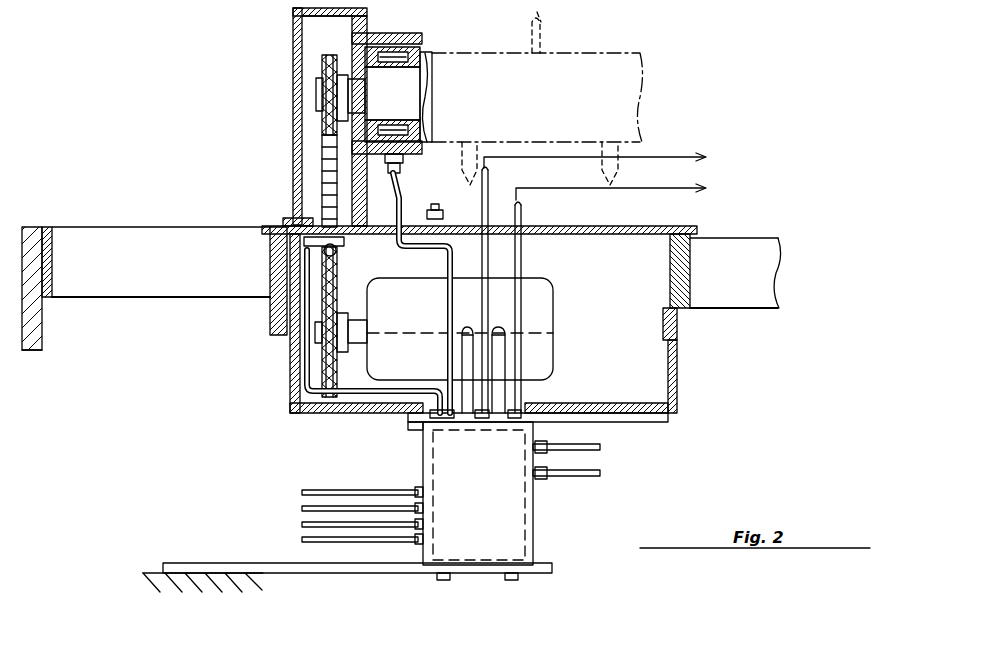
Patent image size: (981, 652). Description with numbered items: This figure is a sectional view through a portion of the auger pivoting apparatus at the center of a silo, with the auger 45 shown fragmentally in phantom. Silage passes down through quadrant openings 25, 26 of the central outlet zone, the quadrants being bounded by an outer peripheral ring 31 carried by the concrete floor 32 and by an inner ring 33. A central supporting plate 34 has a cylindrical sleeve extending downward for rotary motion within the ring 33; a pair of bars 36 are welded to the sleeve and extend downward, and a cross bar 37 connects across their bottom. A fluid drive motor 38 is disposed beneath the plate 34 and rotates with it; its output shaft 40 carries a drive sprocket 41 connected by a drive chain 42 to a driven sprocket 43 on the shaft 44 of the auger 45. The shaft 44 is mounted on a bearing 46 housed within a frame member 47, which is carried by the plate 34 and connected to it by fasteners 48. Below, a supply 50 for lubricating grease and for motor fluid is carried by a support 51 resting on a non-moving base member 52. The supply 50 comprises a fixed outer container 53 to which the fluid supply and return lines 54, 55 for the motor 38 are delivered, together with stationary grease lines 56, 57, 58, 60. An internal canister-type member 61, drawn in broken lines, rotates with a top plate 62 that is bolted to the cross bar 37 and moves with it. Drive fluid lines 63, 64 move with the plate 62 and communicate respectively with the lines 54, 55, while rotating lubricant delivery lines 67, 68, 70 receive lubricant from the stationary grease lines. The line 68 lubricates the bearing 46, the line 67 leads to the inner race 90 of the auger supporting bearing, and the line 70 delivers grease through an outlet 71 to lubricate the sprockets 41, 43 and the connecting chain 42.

The quadrant opening 25 is at (142, 243).
The quadrant opening 26 is at (764, 292).
The outer peripheral ring 31 is at (52, 230).
The concrete floor 32 is at (35, 227).
The inner ring 33 is at (272, 250).
The central supporting plate 34 is at (553, 230).
The bars 36 is at (294, 365).
The cross bar 37 is at (618, 410).
The fluid drive motor 38 is at (545, 302).
The output shaft 40 is at (357, 325).
The drive sprocket 41 is at (334, 290).
The drive chain 42 is at (325, 152).
The driven sprocket 43 is at (324, 73).
The shaft 44 is at (402, 97).
The auger 45 is at (578, 52).
The bearing 46 is at (402, 45).
The frame member 47 is at (357, 22).
The fasteners 48 is at (433, 204).
The supply 50 is at (535, 511).
The support 51 is at (205, 563).
The base member 52 is at (148, 570).
The fixed outer container 53 is at (535, 540).
The fluid supply line 54 is at (600, 476).
The fluid return line 55 is at (602, 447).
The grease line 56 is at (522, 322).
The grease line 57 is at (390, 522).
The grease line 58 is at (338, 506).
The grease line 60 is at (312, 490).
The internal canister-type member 61 is at (524, 487).
The top plate 62 is at (410, 426).
The drive fluid line 63 is at (470, 355).
The drive fluid line 64 is at (497, 367).
The lubricant delivery line 67 is at (522, 270).
The lubricant delivery line 68 is at (448, 270).
The lubricant delivery line 70 is at (378, 390).
The outlet 71 is at (323, 250).
The inner race 90 is at (662, 280).